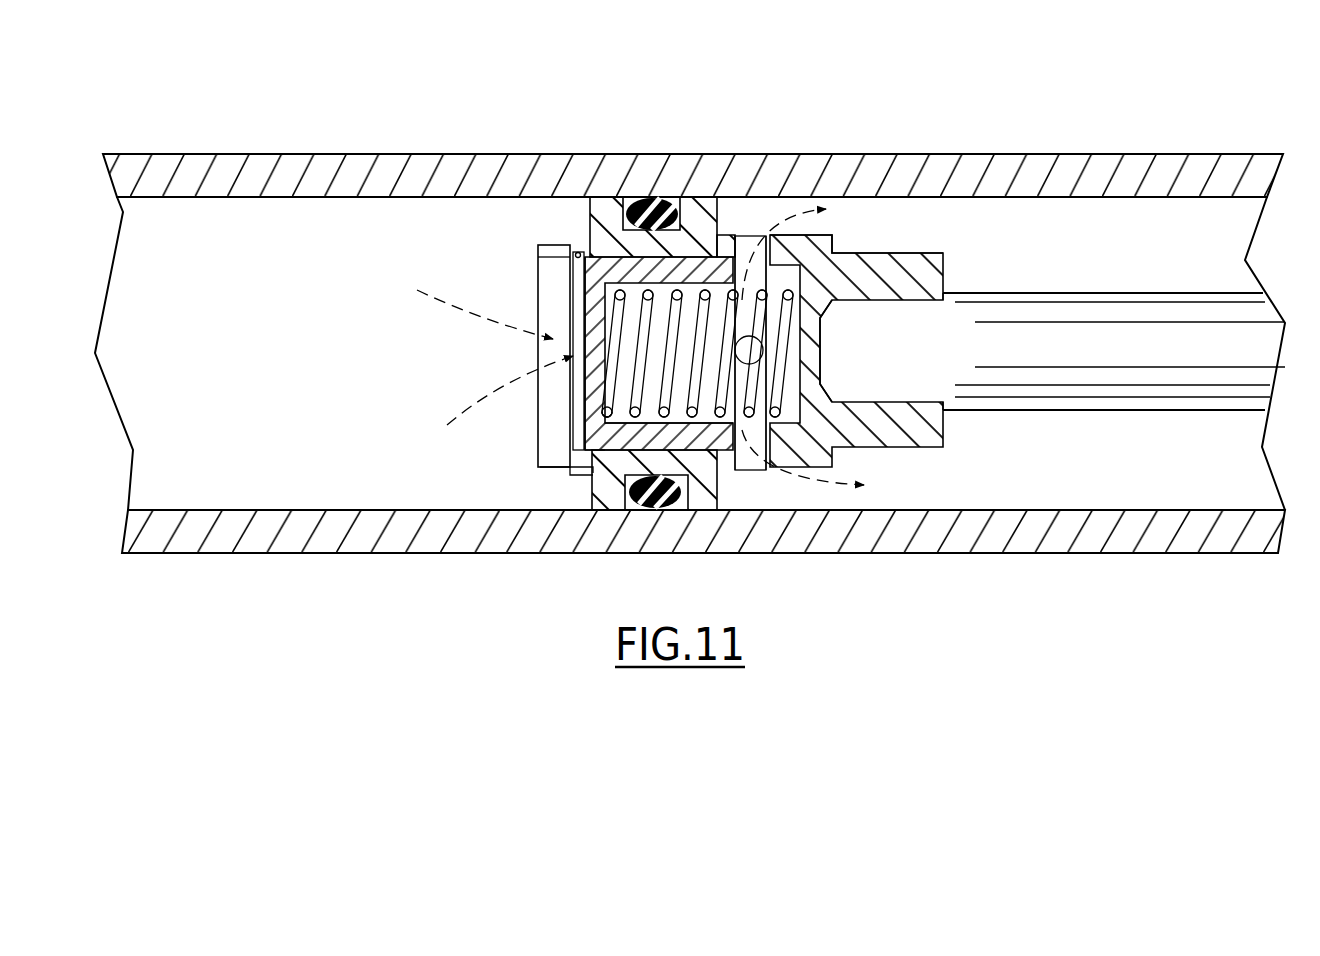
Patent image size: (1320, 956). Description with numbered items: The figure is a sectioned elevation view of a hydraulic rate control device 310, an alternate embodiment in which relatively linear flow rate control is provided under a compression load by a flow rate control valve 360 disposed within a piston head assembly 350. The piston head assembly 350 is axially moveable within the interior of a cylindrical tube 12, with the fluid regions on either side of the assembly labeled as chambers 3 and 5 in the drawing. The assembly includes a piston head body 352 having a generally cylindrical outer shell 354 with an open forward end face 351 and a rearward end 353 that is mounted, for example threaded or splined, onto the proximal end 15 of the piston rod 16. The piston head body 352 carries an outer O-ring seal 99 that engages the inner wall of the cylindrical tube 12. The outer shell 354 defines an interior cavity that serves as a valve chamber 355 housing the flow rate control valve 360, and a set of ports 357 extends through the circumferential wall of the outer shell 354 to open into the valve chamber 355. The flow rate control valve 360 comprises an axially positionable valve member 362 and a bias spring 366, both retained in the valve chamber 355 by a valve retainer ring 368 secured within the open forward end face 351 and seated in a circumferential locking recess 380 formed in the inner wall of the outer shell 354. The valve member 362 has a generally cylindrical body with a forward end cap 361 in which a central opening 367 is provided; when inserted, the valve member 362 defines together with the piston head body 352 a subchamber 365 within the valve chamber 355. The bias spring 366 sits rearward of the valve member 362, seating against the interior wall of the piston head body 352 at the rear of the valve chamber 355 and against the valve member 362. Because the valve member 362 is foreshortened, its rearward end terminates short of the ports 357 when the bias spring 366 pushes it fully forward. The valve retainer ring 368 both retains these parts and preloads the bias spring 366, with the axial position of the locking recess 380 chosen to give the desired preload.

The first chamber 3 is at (323, 356).
The second chamber 5 is at (1142, 259).
The cylindrical tube 12 is at (1053, 153).
The proximal end 15 is at (1114, 358).
The piston rod 16 is at (1133, 411).
The outer O-ring seal 99 is at (658, 203).
The hydraulic rate control device 310 is at (462, 108).
The piston head assembly 350 is at (815, 309).
The open forward end face 351 is at (560, 475).
The piston head body 352 is at (724, 478).
The rearward end 353 is at (940, 250).
The cylindrical outer shell 354 is at (833, 247).
The valve chamber 355 is at (763, 385).
The ports 357 is at (745, 465).
The flow rate control valve 360 is at (617, 465).
The forward end cap 361 is at (545, 452).
The valve member 362 is at (588, 472).
The subchamber 365 is at (592, 338).
The bias spring 366 is at (633, 400).
The central opening 367 is at (625, 325).
The valve retainer ring 368 is at (538, 246).
The circumferential locking recess 380 is at (563, 244).